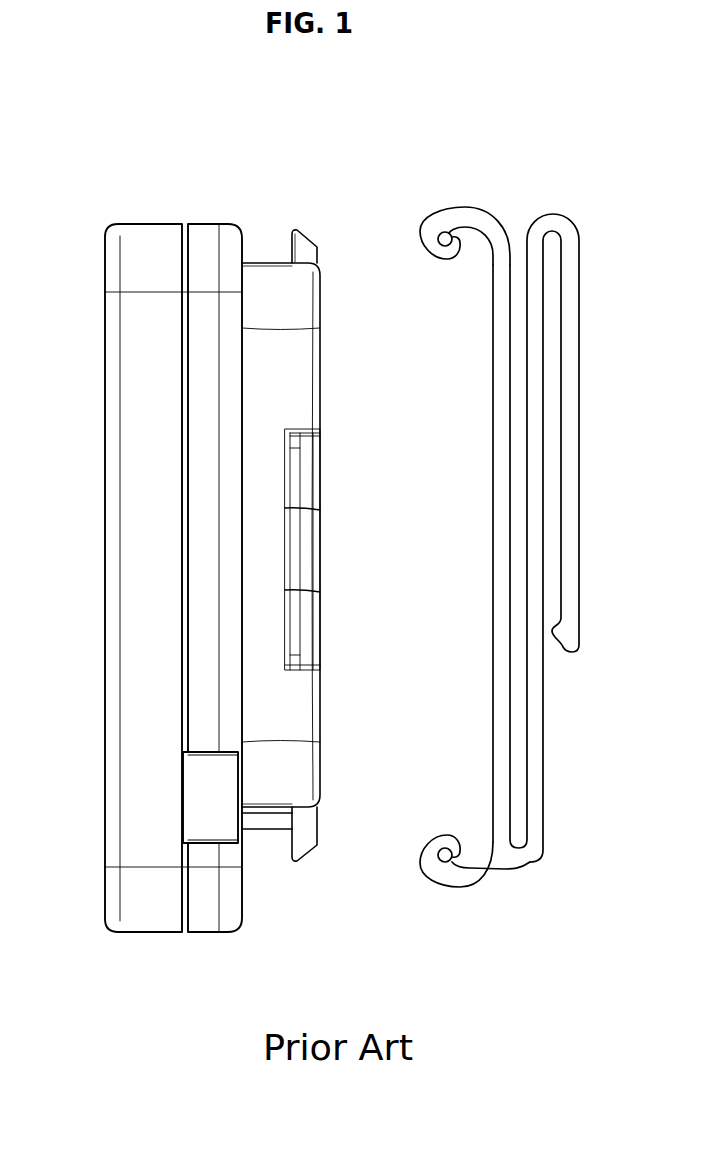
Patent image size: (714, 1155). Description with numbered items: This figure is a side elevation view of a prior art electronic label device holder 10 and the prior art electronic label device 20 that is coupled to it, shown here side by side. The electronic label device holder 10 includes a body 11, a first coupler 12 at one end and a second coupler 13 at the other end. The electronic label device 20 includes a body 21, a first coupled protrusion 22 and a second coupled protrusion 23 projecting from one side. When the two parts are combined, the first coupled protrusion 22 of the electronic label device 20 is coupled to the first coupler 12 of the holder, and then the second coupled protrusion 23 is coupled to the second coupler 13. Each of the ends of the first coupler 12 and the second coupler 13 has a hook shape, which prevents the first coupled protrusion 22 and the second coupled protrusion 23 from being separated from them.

The electronic label device holder 10 is at (492, 200).
The body 11 is at (493, 547).
The first coupler 12 is at (432, 220).
The second coupler 13 is at (455, 878).
The electronic label device 20 is at (95, 201).
The body 21 is at (105, 578).
The first coupled protrusion 22 is at (308, 242).
The second coupled protrusion 23 is at (305, 865).